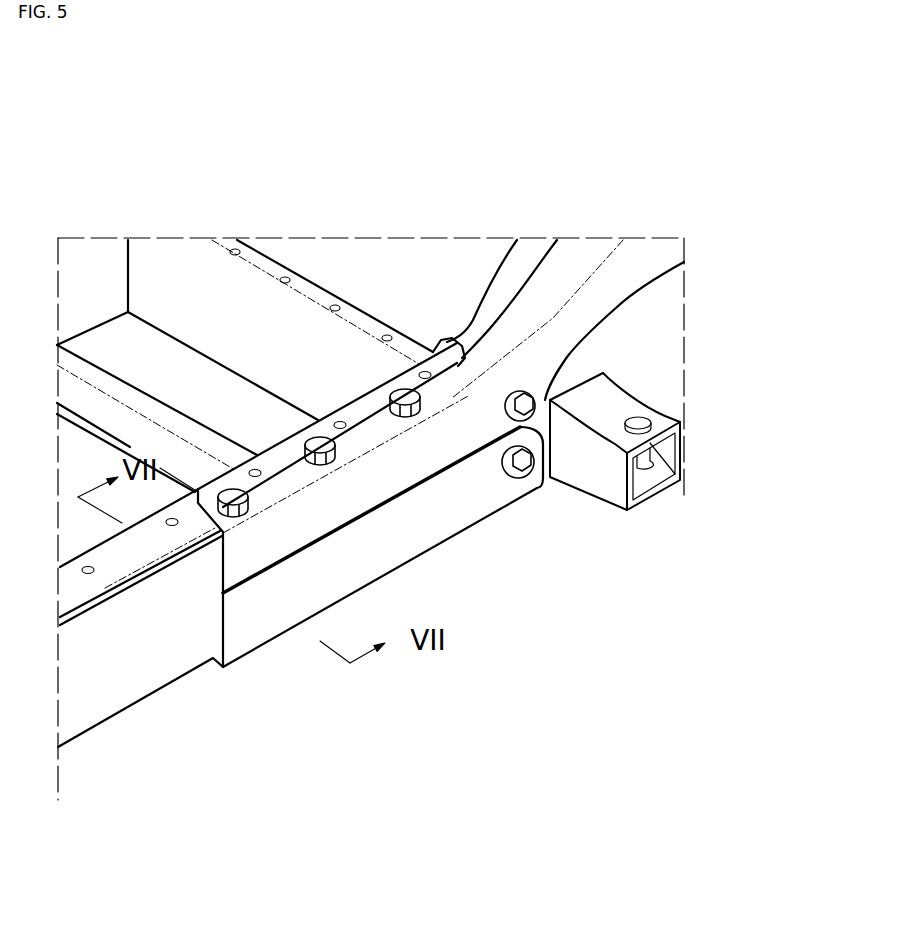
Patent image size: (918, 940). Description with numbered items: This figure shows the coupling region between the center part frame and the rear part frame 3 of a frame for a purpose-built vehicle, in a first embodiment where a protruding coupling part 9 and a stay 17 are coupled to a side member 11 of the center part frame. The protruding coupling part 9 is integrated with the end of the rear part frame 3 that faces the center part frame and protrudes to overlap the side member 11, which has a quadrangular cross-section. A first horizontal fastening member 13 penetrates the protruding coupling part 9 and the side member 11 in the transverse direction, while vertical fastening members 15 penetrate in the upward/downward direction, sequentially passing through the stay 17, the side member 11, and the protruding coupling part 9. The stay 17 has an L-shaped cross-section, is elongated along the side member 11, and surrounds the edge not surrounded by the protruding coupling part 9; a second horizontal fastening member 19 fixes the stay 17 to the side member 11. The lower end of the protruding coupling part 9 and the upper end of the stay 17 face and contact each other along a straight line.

The rear part frame 3 is at (575, 267).
The protruding coupling part 9 is at (367, 488).
The side member 11 is at (167, 657).
The first horizontal fastening member 13 is at (684, 262).
The vertical fastening member 15 is at (233, 485).
The stay 17 is at (447, 512).
The second horizontal fastening member 19 is at (530, 470).